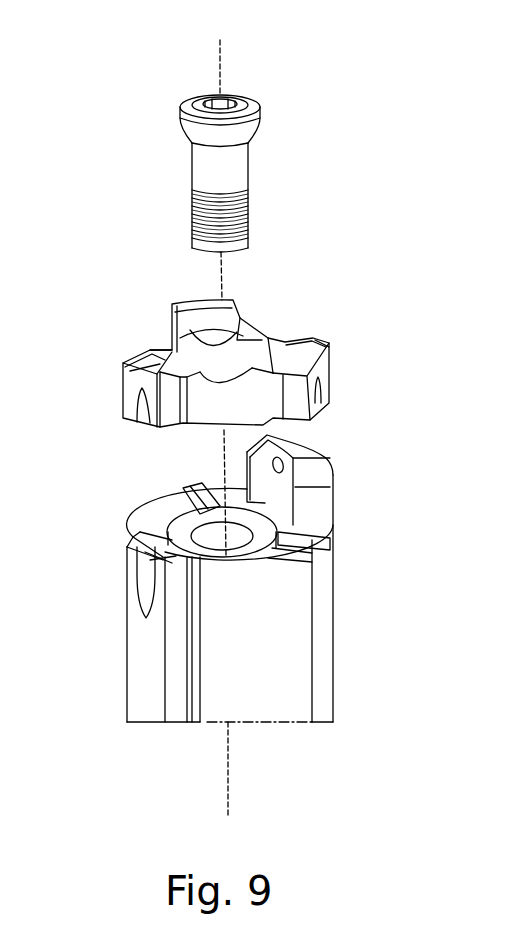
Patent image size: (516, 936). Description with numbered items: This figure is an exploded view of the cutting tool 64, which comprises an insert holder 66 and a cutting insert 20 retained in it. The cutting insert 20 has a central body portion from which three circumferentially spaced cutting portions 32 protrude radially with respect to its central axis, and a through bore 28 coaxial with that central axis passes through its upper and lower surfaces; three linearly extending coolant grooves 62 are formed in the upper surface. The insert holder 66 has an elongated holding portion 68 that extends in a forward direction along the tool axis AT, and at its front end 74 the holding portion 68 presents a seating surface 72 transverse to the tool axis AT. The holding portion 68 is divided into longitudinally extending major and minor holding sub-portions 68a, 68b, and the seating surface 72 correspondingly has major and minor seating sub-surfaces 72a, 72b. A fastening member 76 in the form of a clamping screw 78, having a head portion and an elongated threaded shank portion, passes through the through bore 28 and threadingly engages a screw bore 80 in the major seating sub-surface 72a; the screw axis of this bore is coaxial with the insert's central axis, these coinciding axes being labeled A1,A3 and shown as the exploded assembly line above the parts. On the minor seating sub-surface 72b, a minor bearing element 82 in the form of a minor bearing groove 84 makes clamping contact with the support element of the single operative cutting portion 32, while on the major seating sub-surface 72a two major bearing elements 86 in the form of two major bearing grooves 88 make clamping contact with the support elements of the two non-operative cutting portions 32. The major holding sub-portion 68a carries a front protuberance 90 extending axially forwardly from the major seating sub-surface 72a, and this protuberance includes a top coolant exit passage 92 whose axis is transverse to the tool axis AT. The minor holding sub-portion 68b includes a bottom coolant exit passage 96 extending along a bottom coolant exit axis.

The cutting insert 20 is at (243, 315).
The through bore 28 is at (173, 335).
The cutting portions 32 is at (172, 305).
The coolant grooves 62 is at (160, 345).
The cutting tool 64 is at (271, 181).
The insert holder 66 is at (322, 700).
The holding portion 68 is at (322, 630).
The major holding sub-portion 68a is at (228, 675).
The minor holding sub-portion 68b is at (153, 678).
The seating surface 72 is at (287, 552).
The major seating sub-surface 72a is at (146, 518).
The minor seating sub-surface 72b is at (138, 543).
The front end 74 is at (290, 522).
The fastening member 76 is at (271, 181).
The clamping screw 78 is at (250, 160).
The screw bore 80 is at (158, 517).
The minor bearing element 82 is at (88, 552).
The minor bearing groove 84 is at (147, 553).
The major bearing elements 86 is at (294, 504).
The major bearing grooves 88 is at (188, 492).
The front protuberance 90 is at (310, 478).
The top coolant exit passage 92 is at (278, 443).
The bottom coolant exit passage 96 is at (153, 575).
The central axis and screw axis A1,A3 is at (224, 280).
The tool axis AT is at (227, 784).